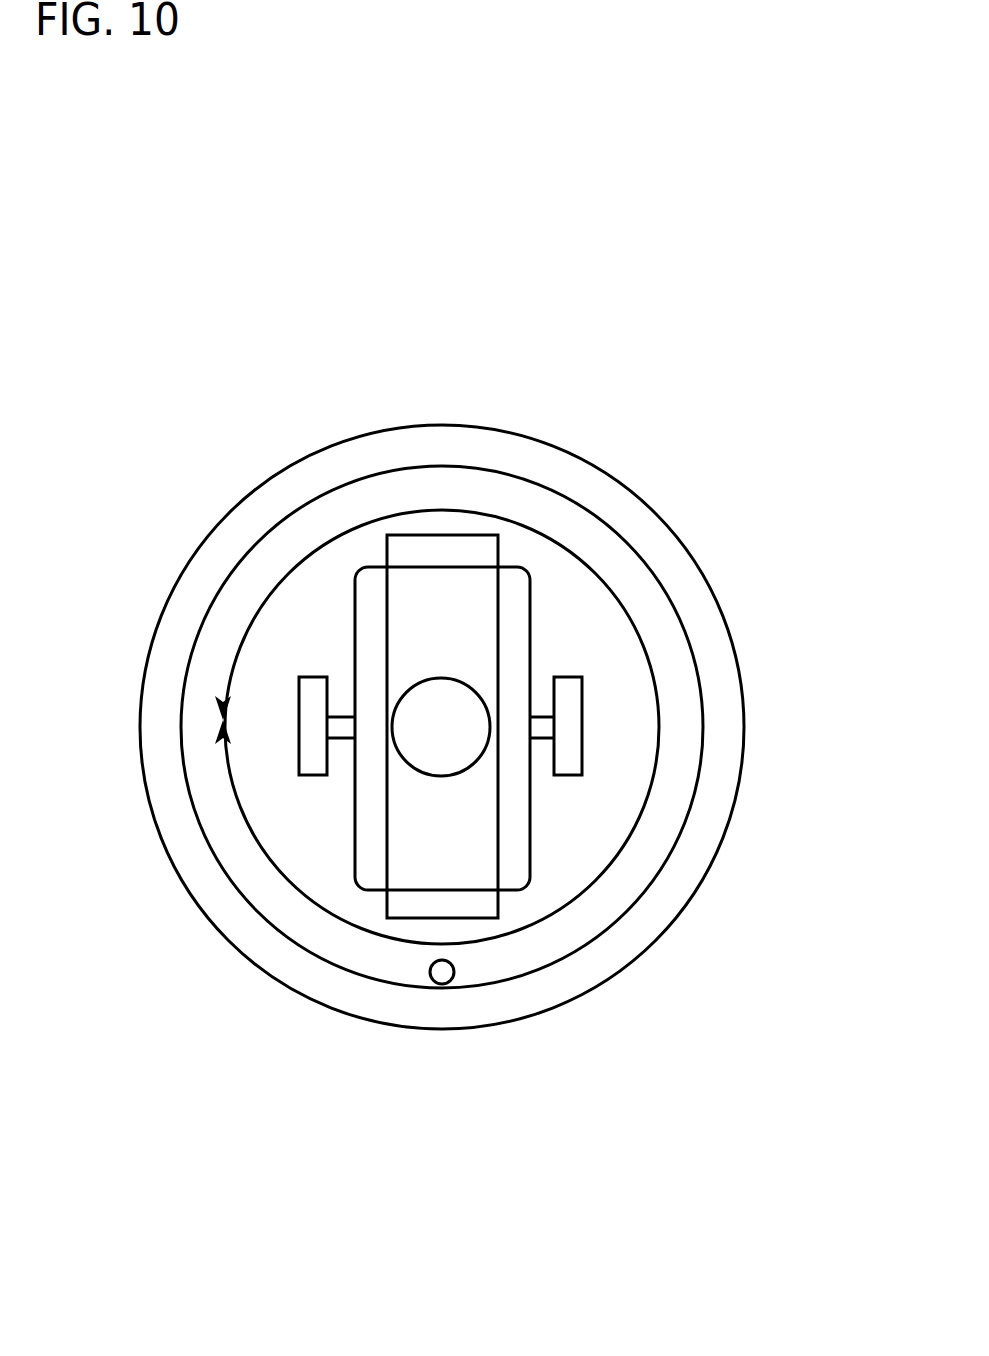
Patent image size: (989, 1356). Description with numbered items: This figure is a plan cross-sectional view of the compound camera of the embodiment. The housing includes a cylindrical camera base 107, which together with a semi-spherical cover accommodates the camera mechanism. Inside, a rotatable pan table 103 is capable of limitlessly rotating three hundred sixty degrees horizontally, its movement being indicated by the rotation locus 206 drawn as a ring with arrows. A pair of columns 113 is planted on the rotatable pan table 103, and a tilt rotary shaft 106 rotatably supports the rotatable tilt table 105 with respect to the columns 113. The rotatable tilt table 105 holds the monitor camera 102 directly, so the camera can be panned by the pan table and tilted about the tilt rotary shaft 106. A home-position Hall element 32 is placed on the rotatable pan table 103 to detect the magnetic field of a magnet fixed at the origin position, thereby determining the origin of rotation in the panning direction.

The cylindrical camera base 107 is at (295, 992).
The rotatable pan table 103 is at (587, 947).
The rotation locus 206 is at (628, 840).
The tilt rotary shaft 106 is at (537, 703).
The rotatable tilt table 105 is at (443, 563).
The monitor camera 102 is at (446, 673).
The columns 113 is at (298, 685).
The home-position Hall element 32 is at (442, 977).